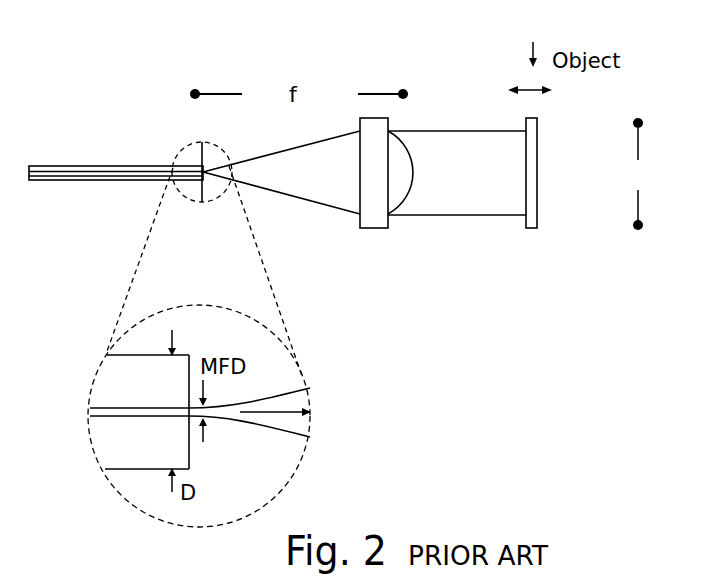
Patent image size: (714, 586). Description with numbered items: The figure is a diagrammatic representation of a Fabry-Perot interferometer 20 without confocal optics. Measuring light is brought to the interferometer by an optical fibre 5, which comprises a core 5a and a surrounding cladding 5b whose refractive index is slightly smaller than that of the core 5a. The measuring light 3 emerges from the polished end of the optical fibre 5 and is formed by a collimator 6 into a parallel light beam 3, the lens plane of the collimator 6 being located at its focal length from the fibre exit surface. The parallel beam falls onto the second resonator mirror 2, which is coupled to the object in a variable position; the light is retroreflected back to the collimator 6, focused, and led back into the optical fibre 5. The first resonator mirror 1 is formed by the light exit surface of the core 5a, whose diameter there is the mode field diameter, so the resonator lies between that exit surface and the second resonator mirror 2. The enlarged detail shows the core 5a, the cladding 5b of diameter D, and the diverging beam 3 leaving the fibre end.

The Fabry-Perot interferometer 20 is at (450, 66).
The optical fibre 5 is at (58, 165).
The core 5a is at (115, 414).
The cladding 5b is at (120, 463).
The first resonator mirror 1 is at (193, 418).
The measuring light 3 is at (297, 197).
The collimator 6 is at (372, 220).
The second resonator mirror 2 is at (537, 208).